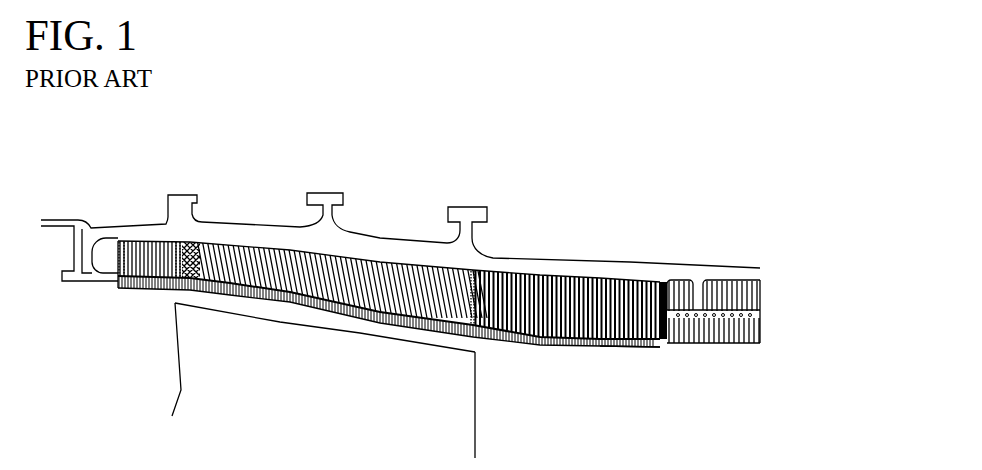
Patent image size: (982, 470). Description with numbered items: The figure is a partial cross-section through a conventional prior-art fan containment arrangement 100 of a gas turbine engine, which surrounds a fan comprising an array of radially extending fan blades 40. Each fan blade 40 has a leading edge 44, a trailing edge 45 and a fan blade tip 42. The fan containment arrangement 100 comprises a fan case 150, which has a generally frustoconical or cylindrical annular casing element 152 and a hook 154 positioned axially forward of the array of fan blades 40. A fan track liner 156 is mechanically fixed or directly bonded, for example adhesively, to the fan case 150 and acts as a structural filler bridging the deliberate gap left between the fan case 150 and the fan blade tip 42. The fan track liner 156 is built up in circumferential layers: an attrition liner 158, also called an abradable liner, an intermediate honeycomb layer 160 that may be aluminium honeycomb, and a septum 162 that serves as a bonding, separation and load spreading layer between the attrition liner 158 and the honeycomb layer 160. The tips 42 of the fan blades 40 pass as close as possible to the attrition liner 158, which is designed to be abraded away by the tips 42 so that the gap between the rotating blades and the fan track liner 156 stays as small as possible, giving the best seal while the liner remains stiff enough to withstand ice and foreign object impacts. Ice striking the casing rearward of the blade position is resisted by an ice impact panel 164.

The fan containment arrangement 100 is at (478, 153).
The fan blade 40 is at (205, 358).
The fan blade tip 42 is at (224, 270).
The leading edge 44 is at (125, 335).
The trailing edge 45 is at (477, 397).
The fan case 150 is at (542, 267).
The annular casing element 152 is at (700, 263).
The hook 154 is at (93, 277).
The fan track liner 156 is at (180, 230).
The attrition liner 158 is at (272, 300).
The honeycomb layer 160 is at (341, 307).
The septum 162 is at (380, 315).
The ice impact panel 164 is at (628, 345).